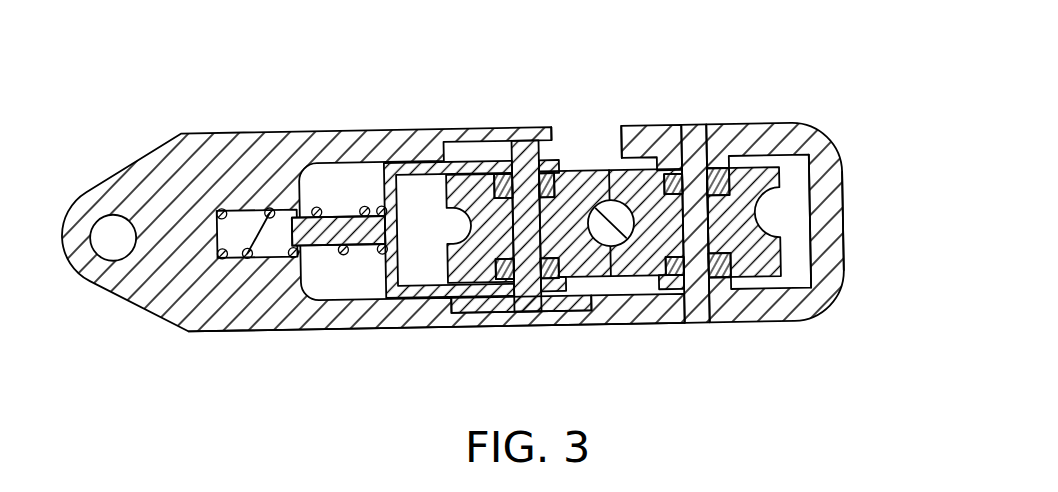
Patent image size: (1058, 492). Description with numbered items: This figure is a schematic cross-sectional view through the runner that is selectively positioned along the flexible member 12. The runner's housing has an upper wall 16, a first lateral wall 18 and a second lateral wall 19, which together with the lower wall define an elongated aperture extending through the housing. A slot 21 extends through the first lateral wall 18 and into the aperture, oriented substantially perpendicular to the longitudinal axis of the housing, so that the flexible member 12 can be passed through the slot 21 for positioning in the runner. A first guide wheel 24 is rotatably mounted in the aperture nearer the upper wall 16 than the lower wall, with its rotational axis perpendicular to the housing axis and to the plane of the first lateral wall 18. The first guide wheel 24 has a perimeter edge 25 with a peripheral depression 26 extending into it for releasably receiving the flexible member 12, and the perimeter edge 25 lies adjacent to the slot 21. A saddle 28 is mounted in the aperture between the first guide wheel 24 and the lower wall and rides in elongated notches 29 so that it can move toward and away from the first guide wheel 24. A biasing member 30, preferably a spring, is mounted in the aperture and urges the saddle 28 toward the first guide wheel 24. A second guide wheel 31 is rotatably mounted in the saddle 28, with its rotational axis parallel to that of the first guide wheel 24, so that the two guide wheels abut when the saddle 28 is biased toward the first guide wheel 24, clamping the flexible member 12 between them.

The flexible member 12 is at (617, 247).
The upper wall 16 is at (842, 226).
The first lateral wall 18 is at (390, 130).
The second lateral wall 19 is at (335, 330).
The slot 21 is at (605, 140).
The first guide wheel 24 is at (783, 123).
The perimeter edge 25 is at (781, 172).
The peripheral depression 26 is at (790, 235).
The saddle 28 is at (385, 191).
The elongated notches 29 is at (490, 303).
The biasing member 30 is at (253, 237).
The second guide wheel 31 is at (590, 168).